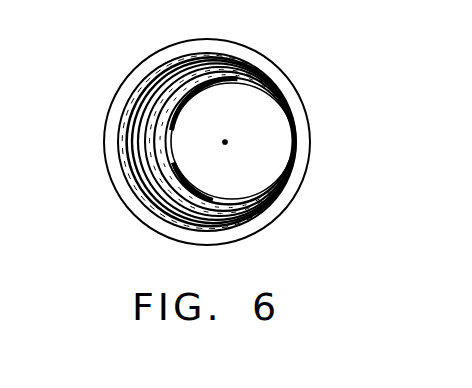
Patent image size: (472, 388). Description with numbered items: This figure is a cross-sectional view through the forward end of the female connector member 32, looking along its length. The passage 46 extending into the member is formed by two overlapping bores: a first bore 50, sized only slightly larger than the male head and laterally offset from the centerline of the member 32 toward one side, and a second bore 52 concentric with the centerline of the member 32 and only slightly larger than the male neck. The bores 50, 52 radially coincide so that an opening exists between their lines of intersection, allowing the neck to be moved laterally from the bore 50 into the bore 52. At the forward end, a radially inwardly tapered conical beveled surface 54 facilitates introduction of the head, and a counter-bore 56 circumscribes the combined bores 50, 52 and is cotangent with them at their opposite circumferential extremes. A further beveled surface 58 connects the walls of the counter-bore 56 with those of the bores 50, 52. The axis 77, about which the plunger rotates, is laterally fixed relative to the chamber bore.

The member 32 is at (118, 102).
The passage 46 is at (272, 120).
The first longitudinally extending bore 50 is at (265, 183).
The second longitudinally extending bore 52 is at (185, 175).
The beveled surface 54 is at (162, 183).
The counter-bore 56 is at (205, 97).
The beveled surface 58 is at (213, 197).
The axis 77 is at (227, 141).